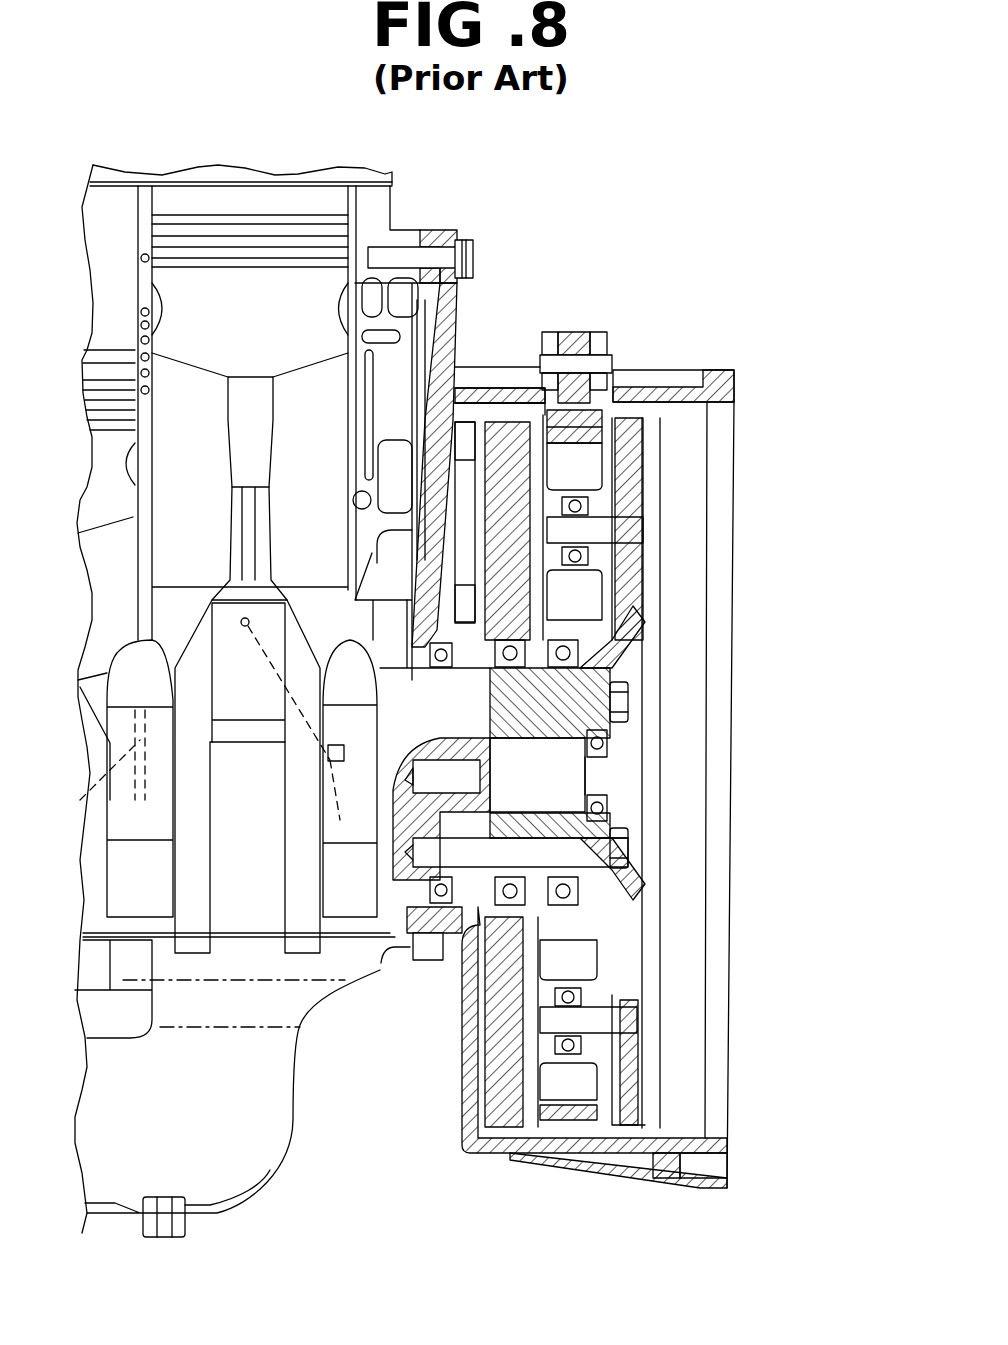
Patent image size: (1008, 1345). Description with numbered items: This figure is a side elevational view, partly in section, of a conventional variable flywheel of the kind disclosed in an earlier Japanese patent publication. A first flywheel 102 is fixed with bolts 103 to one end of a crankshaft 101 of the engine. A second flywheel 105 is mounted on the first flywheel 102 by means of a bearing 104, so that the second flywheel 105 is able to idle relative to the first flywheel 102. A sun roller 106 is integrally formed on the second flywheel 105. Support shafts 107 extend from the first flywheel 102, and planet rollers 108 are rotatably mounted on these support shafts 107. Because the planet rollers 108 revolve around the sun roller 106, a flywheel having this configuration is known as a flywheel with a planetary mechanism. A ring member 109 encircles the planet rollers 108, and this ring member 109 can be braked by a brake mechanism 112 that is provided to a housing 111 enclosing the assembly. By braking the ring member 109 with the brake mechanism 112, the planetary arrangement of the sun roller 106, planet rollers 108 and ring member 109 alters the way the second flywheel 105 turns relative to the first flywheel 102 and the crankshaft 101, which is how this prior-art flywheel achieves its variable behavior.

The crankshaft 101 is at (381, 963).
The first flywheel 102 is at (610, 930).
The bolts 103 is at (628, 850).
The bearing 104 is at (613, 658).
The second flywheel 105 is at (509, 1153).
The sun roller 106 is at (633, 660).
The support shafts 107 is at (630, 525).
The planet rollers 108 is at (580, 597).
The ring member 109 is at (607, 437).
The housing 111 is at (683, 383).
The brake mechanism 112 is at (573, 337).